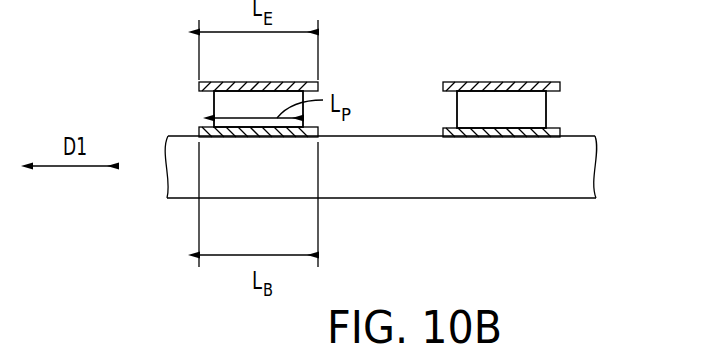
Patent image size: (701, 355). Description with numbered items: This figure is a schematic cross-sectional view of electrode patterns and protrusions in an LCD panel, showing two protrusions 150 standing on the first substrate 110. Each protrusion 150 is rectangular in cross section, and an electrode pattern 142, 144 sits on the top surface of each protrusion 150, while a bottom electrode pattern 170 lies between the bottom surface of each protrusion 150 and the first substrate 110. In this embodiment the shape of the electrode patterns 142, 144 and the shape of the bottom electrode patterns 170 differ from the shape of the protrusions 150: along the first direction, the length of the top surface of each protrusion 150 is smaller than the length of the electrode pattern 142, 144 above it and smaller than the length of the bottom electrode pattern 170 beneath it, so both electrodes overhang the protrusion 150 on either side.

The first substrate 110 is at (582, 163).
The electrode pattern 142 is at (262, 82).
The electrode pattern 144 is at (498, 82).
The protrusion 150 is at (226, 106).
The bottom electrode pattern 170 is at (255, 130).